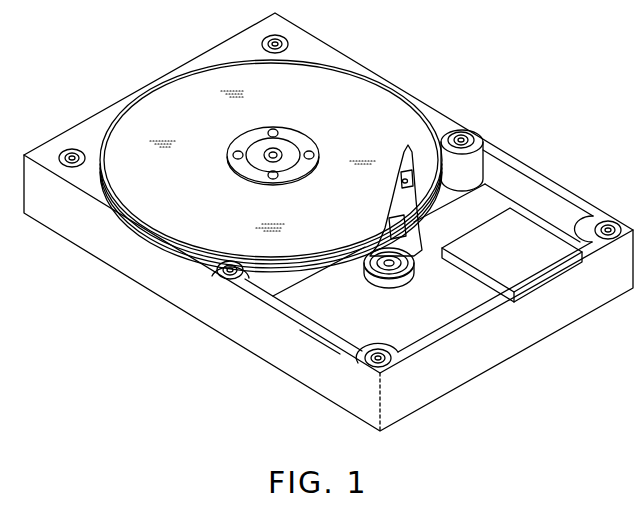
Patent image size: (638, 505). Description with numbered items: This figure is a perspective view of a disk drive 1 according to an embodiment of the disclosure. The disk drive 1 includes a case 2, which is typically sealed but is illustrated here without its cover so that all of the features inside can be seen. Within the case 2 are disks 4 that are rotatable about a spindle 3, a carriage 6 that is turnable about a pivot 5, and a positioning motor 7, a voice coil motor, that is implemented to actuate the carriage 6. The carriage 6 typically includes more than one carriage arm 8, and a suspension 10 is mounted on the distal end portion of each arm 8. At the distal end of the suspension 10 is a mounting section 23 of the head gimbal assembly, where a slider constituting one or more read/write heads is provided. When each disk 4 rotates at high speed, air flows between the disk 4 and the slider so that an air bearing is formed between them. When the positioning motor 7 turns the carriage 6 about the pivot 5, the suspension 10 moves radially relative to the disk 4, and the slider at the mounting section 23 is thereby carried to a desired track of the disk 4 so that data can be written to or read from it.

The disk drive 1 is at (549, 79).
The case 2 is at (172, 297).
The spindle 3 is at (287, 147).
The disks 4 is at (360, 102).
The pivot 5 is at (406, 286).
The carriage 6 is at (437, 213).
The positioning motor 7 is at (317, 340).
The carriage arm 8 is at (445, 133).
The suspension 10 is at (407, 242).
The microactuator mounting section 23 is at (420, 145).